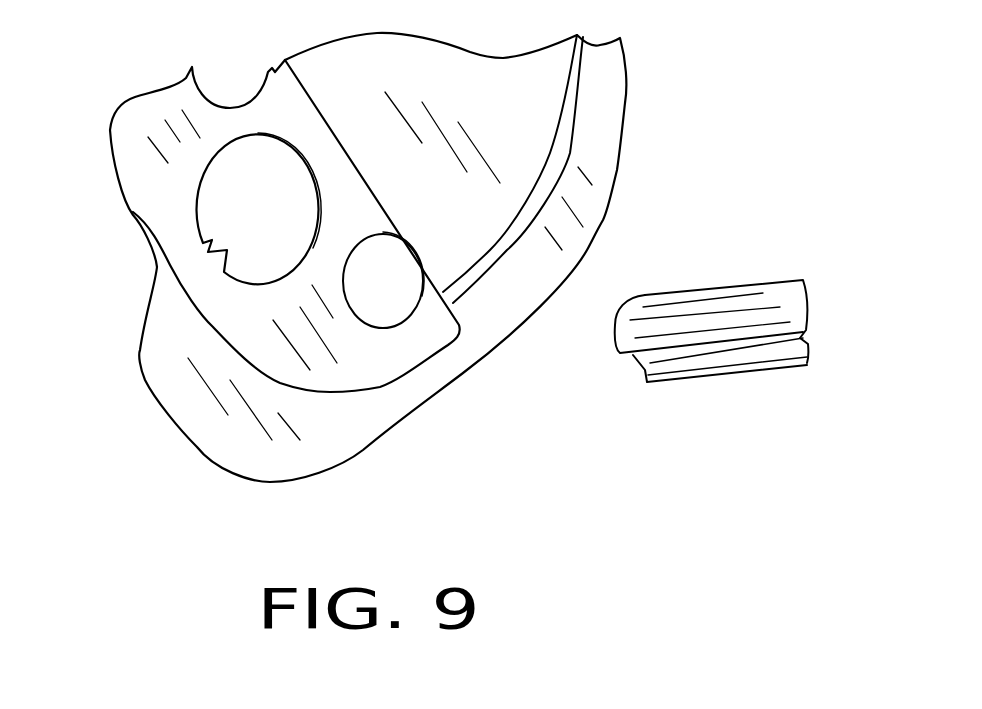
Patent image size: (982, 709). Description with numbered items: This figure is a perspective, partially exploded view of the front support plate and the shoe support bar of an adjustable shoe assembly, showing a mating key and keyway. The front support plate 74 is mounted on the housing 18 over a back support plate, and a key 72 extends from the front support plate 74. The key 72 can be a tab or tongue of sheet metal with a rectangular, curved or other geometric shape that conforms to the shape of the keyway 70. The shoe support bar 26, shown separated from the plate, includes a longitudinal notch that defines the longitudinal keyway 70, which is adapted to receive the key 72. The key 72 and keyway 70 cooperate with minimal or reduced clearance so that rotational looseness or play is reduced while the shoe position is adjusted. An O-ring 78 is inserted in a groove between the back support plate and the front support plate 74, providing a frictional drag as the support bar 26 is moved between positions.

The housing 18 is at (218, 417).
The shoe support bar 26 is at (770, 282).
The longitudinal keyway 70 is at (675, 360).
The key 72 is at (207, 250).
The front support plate 74 is at (233, 312).
The O-ring 78 is at (278, 238).